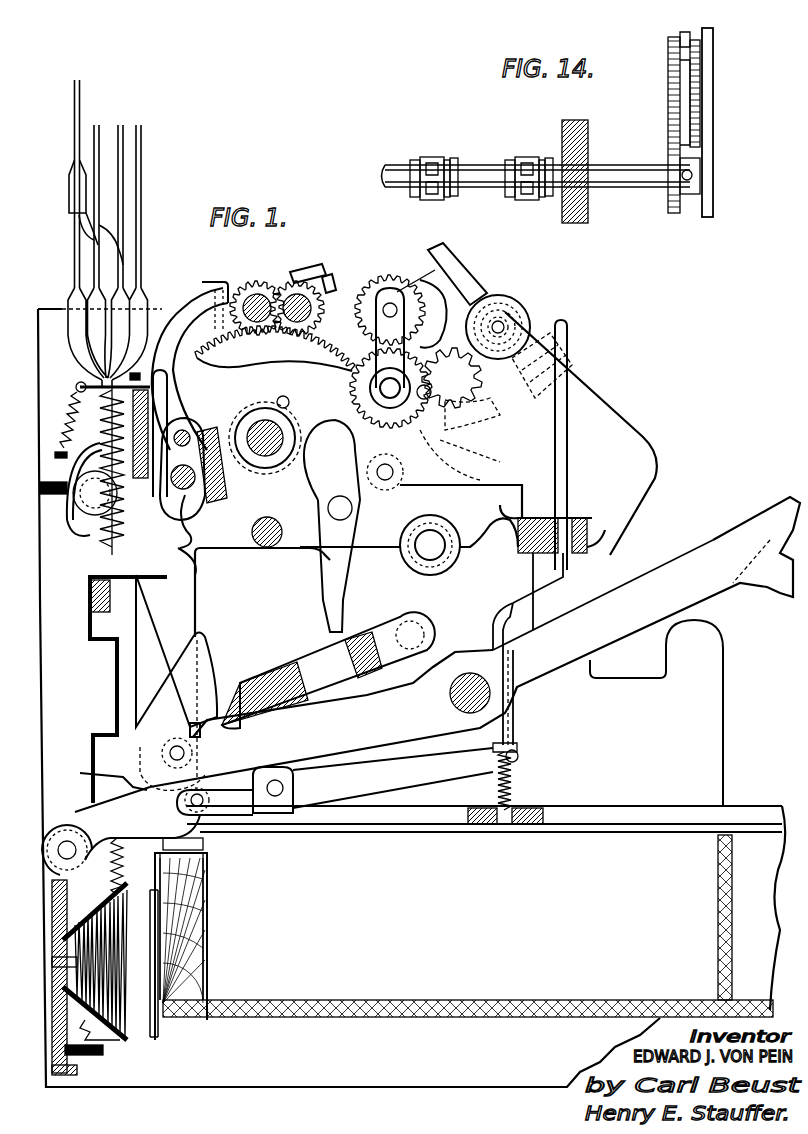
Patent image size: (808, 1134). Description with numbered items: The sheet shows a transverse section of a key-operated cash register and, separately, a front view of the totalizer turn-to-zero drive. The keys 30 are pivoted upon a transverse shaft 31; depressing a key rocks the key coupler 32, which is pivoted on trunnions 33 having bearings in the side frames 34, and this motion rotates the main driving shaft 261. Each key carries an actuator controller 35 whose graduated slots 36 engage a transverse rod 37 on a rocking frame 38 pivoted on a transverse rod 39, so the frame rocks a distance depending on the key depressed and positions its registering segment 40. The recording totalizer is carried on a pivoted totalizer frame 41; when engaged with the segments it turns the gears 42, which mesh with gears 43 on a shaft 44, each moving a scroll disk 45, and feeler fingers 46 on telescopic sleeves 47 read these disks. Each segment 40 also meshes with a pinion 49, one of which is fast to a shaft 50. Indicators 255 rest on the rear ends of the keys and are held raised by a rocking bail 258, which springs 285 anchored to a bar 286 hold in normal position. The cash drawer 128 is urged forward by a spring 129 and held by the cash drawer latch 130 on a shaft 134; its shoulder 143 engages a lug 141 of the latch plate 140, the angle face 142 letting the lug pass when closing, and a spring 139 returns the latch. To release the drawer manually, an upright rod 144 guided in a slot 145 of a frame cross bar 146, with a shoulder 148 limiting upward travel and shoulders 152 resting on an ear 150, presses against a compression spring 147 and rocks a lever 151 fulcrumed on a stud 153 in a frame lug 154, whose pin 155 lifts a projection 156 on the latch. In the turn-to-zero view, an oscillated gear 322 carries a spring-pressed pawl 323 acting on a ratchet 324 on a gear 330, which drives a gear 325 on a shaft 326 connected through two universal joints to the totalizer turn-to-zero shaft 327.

In FIG. 1, the indicator 255 is at (92, 350).
In FIG. 1, the bar 286 is at (80, 384).
In FIG. 1, the spring 285 is at (76, 394).
In FIG. 1, the rocking bail 258 is at (75, 525).
In FIG. 1, the rocking frame 38 is at (212, 430).
In FIG. 1, the transverse rod 39 is at (260, 428).
In FIG. 1, the registering segment 40 is at (330, 432).
In FIG. 1, the gear 42 is at (352, 392).
In FIG. 1, the totalizer turn-to-zero shaft 327 is at (378, 388).
In FIG. 14, the totalizer turn-to-zero shaft 327 is at (390, 165).
In FIG. 1, the gear 43 is at (380, 277).
In FIG. 1, the shaft 44 is at (391, 302).
In FIG. 1, the scroll disk 45 is at (440, 318).
In FIG. 1, the feeler finger 46 is at (452, 258).
In FIG. 1, the telescopic sleeve 47 is at (506, 318).
In FIG. 1, the totalizer frame 41 is at (470, 464).
In FIG. 1, the upright rod 144 is at (568, 453).
In FIG. 1, the shaft 50 is at (393, 480).
In FIG. 1, the pinion 49 is at (395, 490).
In FIG. 1, the transverse rod 37 is at (190, 488).
In FIG. 1, the graduated slot 36 is at (195, 523).
In FIG. 1, the shaft 261 is at (252, 536).
In FIG. 1, the frame cross bar 146 is at (590, 550).
In FIG. 1, the slot 145 is at (582, 556).
In FIG. 1, the shoulder 148 is at (533, 570).
In FIG. 1, the actuator controller 35 is at (182, 622).
In FIG. 1, the key coupler 32 is at (290, 664).
In FIG. 1, the trunnion 33 is at (416, 634).
In FIG. 1, the transverse shaft 31 is at (468, 672).
In FIG. 1, the key 30 is at (567, 664).
In FIG. 1, the side frame 34 is at (706, 705).
In FIG. 1, the projection 156 is at (207, 773).
In FIG. 1, the cash drawer latch 130 is at (134, 800).
In FIG. 1, the shaft 134 is at (67, 840).
In FIG. 1, the pin 155 is at (204, 800).
In FIG. 1, the stud 153 is at (284, 788).
In FIG. 1, the lever 151 is at (393, 778).
In FIG. 1, the shoulder 152 is at (514, 745).
In FIG. 1, the ear 150 is at (519, 755).
In FIG. 1, the compression spring 147 is at (514, 785).
In FIG. 1, the spring 139 is at (118, 862).
In FIG. 1, the angle face 142 is at (212, 840).
In FIG. 1, the lug 141 is at (207, 853).
In FIG. 1, the shoulder 143 is at (213, 850).
In FIG. 1, the latch plate 140 is at (210, 862).
In FIG. 1, the lug 154 is at (287, 802).
In FIG. 1, the spring 129 is at (135, 1030).
In FIG. 1, the cash drawer 128 is at (312, 1030).
In FIG. 14, the shaft 326 is at (640, 162).
In FIG. 14, the gear 330 is at (668, 122).
In FIG. 14, the gear 322 is at (700, 92).
In FIG. 14, the spring-pressed pawl 323 is at (688, 50).
In FIG. 14, the ratchet 324 is at (683, 78).
In FIG. 14, the gear 325 is at (674, 198).